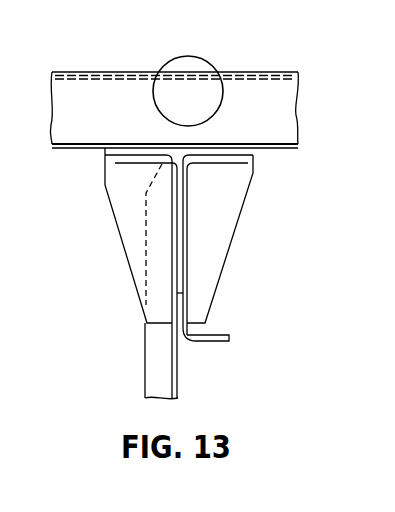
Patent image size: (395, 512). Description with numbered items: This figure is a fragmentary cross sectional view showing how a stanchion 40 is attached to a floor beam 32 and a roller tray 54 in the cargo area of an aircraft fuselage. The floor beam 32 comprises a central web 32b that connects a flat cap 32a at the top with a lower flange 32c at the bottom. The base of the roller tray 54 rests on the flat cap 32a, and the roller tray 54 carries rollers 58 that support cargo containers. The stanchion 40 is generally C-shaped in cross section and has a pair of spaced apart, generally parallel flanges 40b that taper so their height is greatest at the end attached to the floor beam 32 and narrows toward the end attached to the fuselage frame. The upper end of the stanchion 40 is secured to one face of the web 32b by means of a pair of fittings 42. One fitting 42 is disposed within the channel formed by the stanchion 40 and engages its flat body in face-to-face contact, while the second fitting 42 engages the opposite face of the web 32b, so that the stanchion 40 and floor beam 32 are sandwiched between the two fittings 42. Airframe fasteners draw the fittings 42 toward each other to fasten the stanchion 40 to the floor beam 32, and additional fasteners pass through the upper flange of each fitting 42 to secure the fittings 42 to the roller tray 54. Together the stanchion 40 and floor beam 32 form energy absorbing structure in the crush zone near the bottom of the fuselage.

The floor beam 32 is at (201, 219).
The flat cap 32a is at (172, 144).
The central web 32b is at (183, 202).
The lower flange 32c is at (210, 342).
The stanchion 40 is at (115, 281).
The flange 40b is at (150, 352).
The fitting 42 is at (123, 187).
The roller tray 54 is at (243, 102).
The roller 58 is at (201, 66).